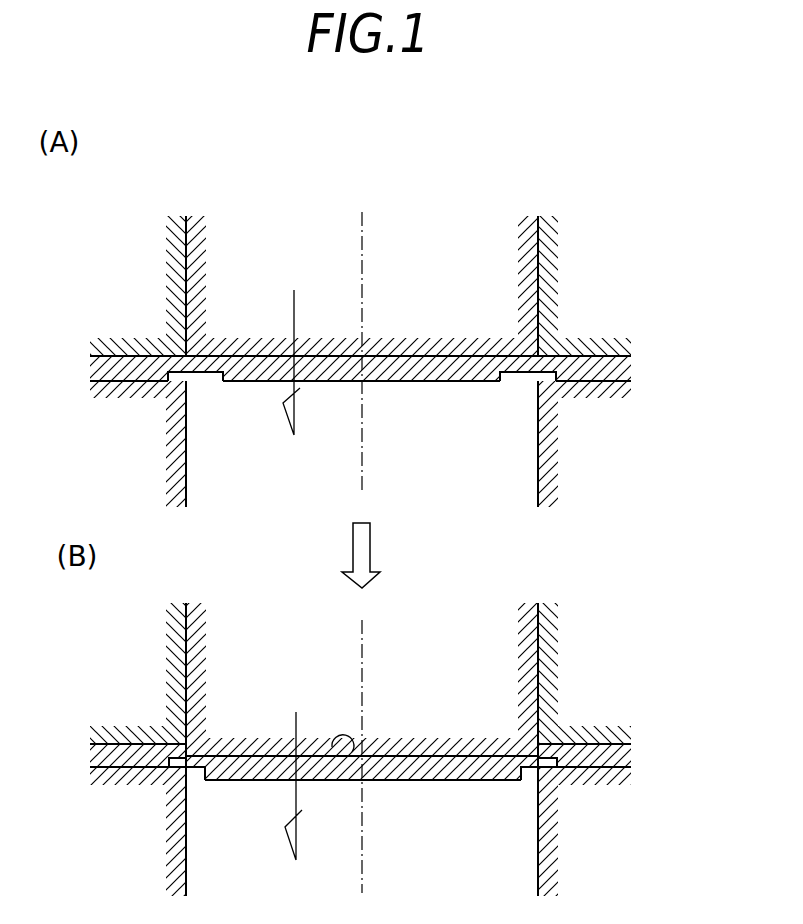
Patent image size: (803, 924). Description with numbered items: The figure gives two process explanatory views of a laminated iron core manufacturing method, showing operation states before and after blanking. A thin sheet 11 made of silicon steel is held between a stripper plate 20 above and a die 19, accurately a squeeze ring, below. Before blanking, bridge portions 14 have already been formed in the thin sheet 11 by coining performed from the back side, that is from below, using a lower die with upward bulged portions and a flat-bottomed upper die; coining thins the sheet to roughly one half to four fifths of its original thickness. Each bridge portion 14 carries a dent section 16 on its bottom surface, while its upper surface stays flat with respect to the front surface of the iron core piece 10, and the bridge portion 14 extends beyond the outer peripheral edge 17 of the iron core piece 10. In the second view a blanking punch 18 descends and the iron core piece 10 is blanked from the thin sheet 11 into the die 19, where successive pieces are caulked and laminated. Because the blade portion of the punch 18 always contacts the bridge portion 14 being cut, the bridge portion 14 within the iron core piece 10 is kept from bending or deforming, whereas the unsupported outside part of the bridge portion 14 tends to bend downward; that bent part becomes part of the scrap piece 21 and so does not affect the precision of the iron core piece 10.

The iron core piece 10 is at (418, 782).
The thin sheet 11 is at (626, 364).
The bridge portion 14 is at (146, 345).
The dent section 16 is at (206, 374).
The outer peripheral edge 17 is at (553, 747).
The punch 18 is at (505, 268).
The die 19 is at (190, 476).
The stripper plate 20 is at (150, 253).
The scrap piece 21 is at (595, 762).